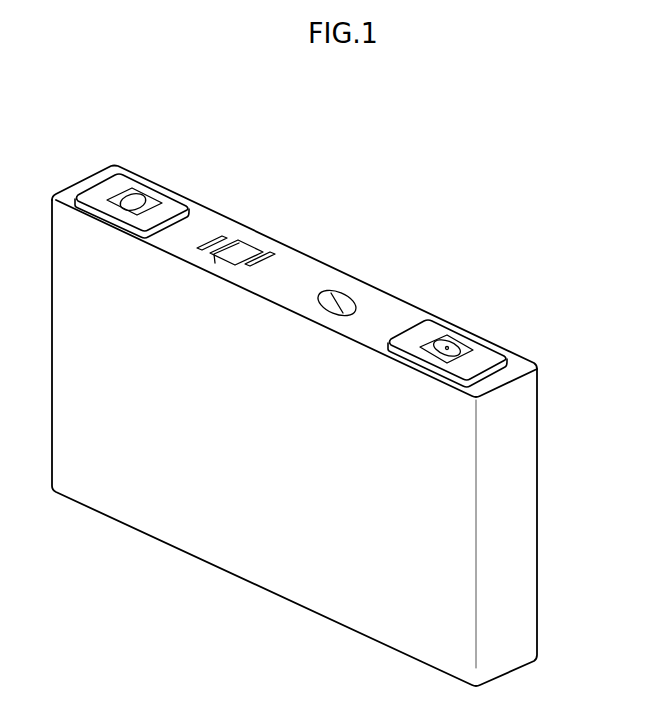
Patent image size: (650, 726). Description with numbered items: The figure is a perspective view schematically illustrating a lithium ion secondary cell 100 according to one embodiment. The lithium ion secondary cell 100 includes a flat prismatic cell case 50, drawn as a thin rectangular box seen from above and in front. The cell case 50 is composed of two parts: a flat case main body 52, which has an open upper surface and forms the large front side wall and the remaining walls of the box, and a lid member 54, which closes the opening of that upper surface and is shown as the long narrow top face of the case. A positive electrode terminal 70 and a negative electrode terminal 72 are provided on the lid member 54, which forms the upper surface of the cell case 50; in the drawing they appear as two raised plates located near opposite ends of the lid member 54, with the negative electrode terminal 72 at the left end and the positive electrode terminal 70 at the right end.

The lithium ion secondary cell 100 is at (497, 152).
The cell case 50 is at (309, 560).
The case main body 52 is at (212, 520).
The lid member 54 is at (291, 264).
The positive electrode terminal 70 is at (455, 345).
The negative electrode terminal 72 is at (140, 199).